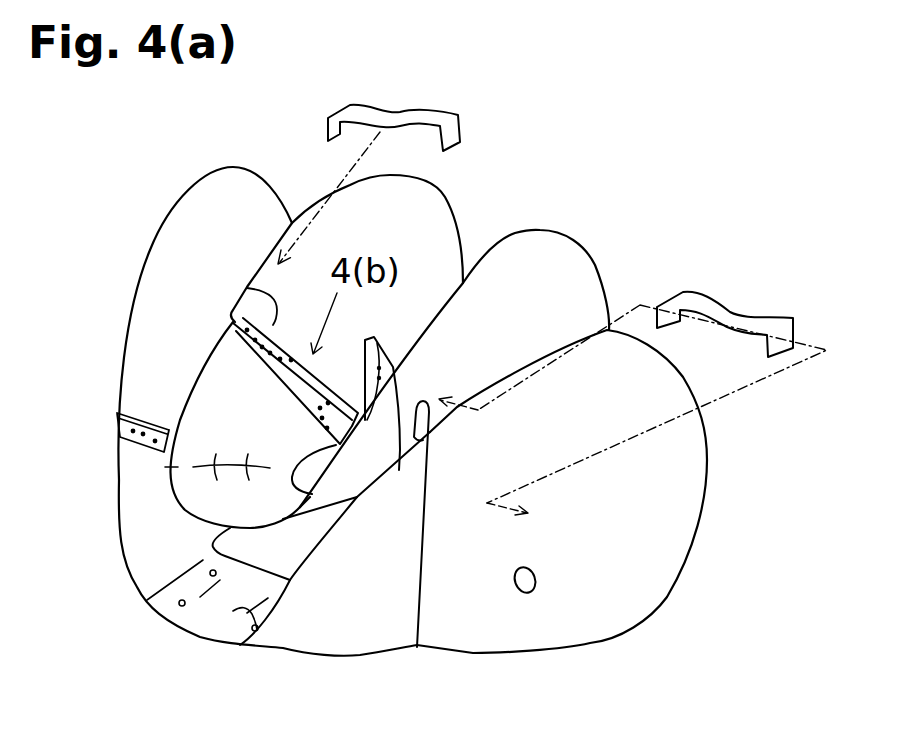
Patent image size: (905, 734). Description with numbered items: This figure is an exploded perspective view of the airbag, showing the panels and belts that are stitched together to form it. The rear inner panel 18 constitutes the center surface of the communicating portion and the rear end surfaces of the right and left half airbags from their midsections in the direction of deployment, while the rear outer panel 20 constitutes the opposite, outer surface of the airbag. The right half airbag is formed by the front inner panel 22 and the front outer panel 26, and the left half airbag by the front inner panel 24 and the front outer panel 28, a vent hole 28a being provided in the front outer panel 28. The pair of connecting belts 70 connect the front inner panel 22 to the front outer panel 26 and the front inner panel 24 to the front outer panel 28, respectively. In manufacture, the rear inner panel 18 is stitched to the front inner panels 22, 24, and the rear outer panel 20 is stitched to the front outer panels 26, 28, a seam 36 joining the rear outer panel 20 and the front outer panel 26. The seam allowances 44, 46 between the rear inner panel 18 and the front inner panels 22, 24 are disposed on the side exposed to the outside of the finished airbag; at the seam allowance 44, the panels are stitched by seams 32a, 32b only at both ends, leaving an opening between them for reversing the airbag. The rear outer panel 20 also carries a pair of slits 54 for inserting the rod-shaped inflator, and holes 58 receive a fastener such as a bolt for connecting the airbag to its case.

The rear inner panel 18 is at (162, 467).
The rear outer panel 20 is at (367, 640).
The front inner panel 22 is at (413, 197).
The front inner panel 24 is at (565, 255).
The front outer panel 26 is at (230, 190).
The front outer panel 28 is at (595, 491).
The vent hole 28a is at (537, 570).
The seam 32a is at (253, 342).
The seam 32b is at (320, 416).
The seam 36 is at (143, 430).
The seam allowance 44 is at (247, 288).
The seam allowance 46 is at (393, 366).
The slits 54 is at (213, 577).
The holes 58 is at (178, 603).
The connecting belts 70 is at (393, 122).